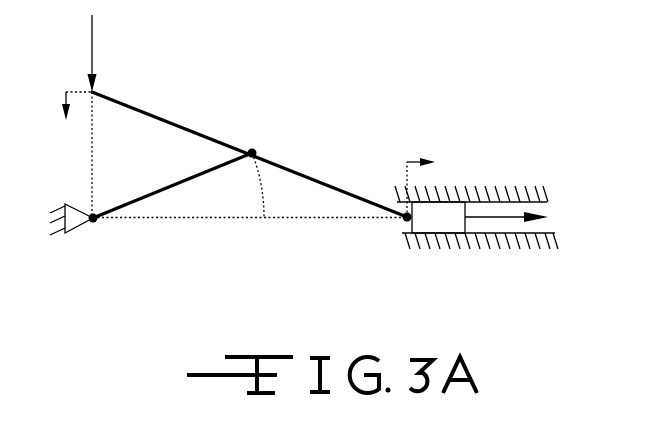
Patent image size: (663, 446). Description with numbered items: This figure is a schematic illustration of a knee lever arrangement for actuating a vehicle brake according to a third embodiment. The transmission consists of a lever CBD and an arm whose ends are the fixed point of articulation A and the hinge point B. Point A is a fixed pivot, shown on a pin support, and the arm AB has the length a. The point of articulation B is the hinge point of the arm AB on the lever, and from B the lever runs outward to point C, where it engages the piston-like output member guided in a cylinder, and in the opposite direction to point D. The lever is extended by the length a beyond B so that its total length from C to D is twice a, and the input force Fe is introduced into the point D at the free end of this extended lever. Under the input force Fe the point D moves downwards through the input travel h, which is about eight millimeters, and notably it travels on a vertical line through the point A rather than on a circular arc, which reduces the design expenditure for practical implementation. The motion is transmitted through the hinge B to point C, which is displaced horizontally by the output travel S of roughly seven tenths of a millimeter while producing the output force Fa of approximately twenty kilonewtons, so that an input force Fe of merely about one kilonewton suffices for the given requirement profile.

The point of articulation A is at (80, 224).
The point of articulation B is at (258, 145).
The point of the lever C is at (471, 217).
The point of force introduction D is at (102, 83).
The length a is at (249, 155).
The input force Fe is at (80, 53).
The output force Fa is at (521, 216).
The input travel h is at (69, 106).
The output travel S is at (421, 179).